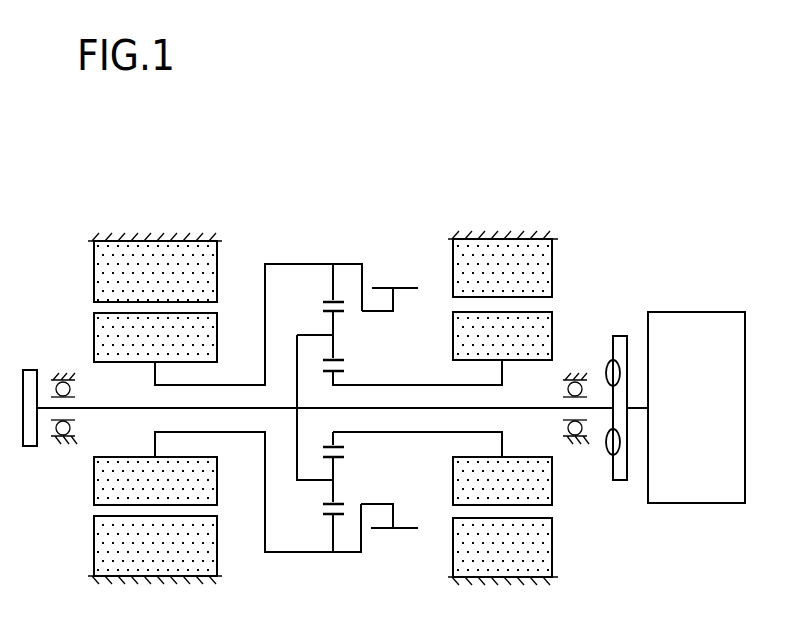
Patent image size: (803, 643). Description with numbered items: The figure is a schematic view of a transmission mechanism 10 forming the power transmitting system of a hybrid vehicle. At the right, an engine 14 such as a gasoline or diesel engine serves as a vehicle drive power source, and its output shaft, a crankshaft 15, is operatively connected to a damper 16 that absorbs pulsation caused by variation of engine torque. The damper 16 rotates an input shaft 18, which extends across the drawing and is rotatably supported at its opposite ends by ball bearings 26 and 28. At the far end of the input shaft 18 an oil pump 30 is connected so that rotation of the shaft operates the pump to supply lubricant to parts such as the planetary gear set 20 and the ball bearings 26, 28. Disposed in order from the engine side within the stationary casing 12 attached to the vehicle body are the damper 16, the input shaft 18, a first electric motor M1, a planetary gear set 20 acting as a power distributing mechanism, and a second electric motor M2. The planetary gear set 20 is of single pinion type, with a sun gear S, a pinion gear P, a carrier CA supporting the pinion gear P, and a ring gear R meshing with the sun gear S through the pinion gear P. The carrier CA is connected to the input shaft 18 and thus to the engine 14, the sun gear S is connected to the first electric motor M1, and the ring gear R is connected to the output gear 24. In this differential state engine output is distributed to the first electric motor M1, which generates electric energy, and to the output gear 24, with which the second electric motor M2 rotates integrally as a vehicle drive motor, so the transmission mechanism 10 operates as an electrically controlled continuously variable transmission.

The transmission mechanism 10 is at (455, 150).
The casing 12 is at (162, 240).
The engine 14 is at (679, 326).
The crankshaft 15 is at (637, 400).
The damper 16 is at (617, 336).
The input shaft 18 is at (536, 411).
The planetary gear set 20 is at (328, 373).
The output gear 24 is at (391, 287).
The ball bearing 26 is at (581, 441).
The ball bearing 28 is at (65, 439).
The oil pump 30 is at (32, 369).
The first electric motor M1 is at (502, 408).
The second electric motor M2 is at (155, 408).
The ring gear R is at (323, 300).
The carrier CA is at (306, 334).
The pinion gear P is at (341, 314).
The sun gear S is at (343, 375).